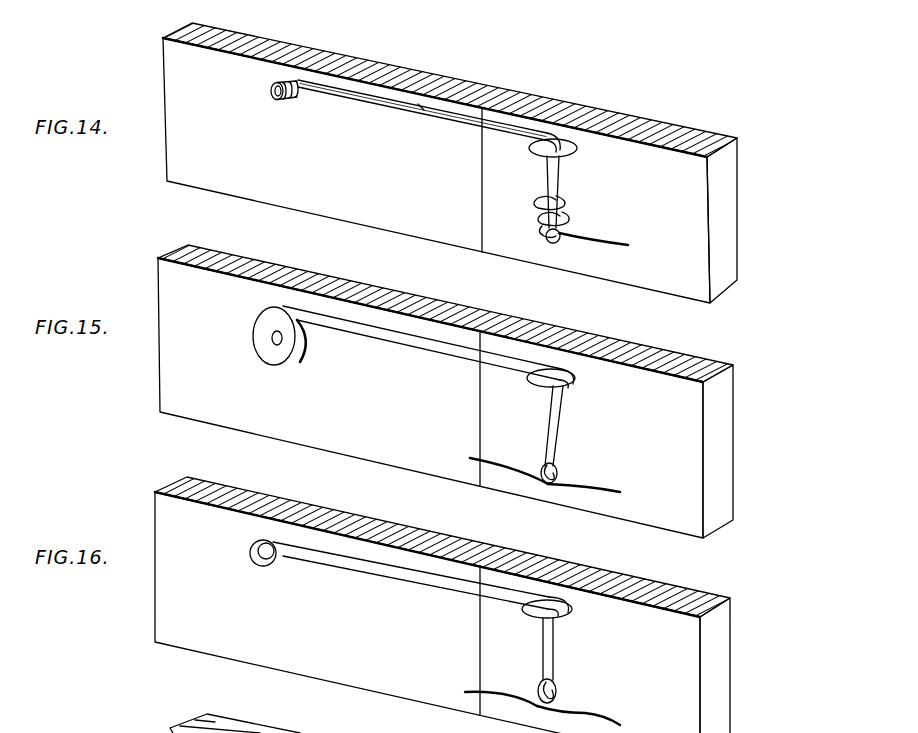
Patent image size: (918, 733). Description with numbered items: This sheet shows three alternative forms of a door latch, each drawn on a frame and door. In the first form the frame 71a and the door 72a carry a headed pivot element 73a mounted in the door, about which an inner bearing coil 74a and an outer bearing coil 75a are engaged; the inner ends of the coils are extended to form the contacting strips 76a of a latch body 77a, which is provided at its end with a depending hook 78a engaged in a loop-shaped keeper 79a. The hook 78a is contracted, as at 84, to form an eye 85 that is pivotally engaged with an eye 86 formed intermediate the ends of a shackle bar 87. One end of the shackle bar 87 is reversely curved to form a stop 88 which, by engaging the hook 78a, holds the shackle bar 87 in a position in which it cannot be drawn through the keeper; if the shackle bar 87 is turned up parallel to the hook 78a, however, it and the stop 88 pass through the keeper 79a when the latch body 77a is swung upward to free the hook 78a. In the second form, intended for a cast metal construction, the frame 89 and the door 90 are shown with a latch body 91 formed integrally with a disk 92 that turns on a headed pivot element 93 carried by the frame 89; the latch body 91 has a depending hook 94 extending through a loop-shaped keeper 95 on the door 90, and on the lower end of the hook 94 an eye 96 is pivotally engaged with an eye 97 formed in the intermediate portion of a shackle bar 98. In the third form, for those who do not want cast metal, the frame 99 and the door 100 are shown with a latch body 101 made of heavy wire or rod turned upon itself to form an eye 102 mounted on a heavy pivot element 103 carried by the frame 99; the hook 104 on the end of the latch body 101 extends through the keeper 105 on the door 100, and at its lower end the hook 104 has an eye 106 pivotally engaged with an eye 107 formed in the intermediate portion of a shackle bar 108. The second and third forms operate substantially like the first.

In FIG. 14, the frame 71a is at (166, 70).
In FIG. 14, the door 72a is at (730, 234).
In FIG. 14, the headed pivot element 73a is at (275, 100).
In FIG. 14, the inner bearing coil 74a is at (287, 99).
In FIG. 14, the outer bearing coil 75a is at (310, 94).
In FIG. 14, the contacting strips 76a is at (422, 105).
In FIG. 14, the latch body 77a is at (388, 92).
In FIG. 14, the hook 78a is at (563, 178).
In FIG. 14, the keeper 79a is at (540, 153).
In FIG. 14, the contraction 84 is at (566, 219).
In FIG. 14, the eye 85 is at (549, 240).
In FIG. 14, the eye 86 is at (560, 242).
In FIG. 14, the shackle bar 87 is at (625, 240).
In FIG. 14, the stop 88 is at (540, 205).
In FIG. 15, the frame 89 is at (163, 393).
In FIG. 15, the door 90 is at (722, 477).
In FIG. 15, the latch body 91 is at (408, 342).
In FIG. 15, the disk 92 is at (294, 363).
In FIG. 15, the headed pivot element 93 is at (277, 346).
In FIG. 15, the hook 94 is at (558, 411).
In FIG. 15, the keeper 95 is at (533, 383).
In FIG. 15, the eye 96 is at (567, 449).
In FIG. 15, the eye 97 is at (553, 477).
In FIG. 15, the shackle bar 98 is at (602, 482).
In FIG. 16, the frame 99 is at (168, 621).
In FIG. 16, the door 100 is at (718, 711).
In FIG. 16, the latch body 101 is at (420, 580).
In FIG. 16, the eye 102 is at (282, 566).
In FIG. 16, the pivot element 103 is at (267, 566).
In FIG. 16, the hook 104 is at (553, 649).
In FIG. 16, the keeper 105 is at (570, 612).
In FIG. 16, the eye 106 is at (560, 691).
In FIG. 16, the eye 107 is at (565, 709).
In FIG. 16, the shackle bar 108 is at (528, 693).